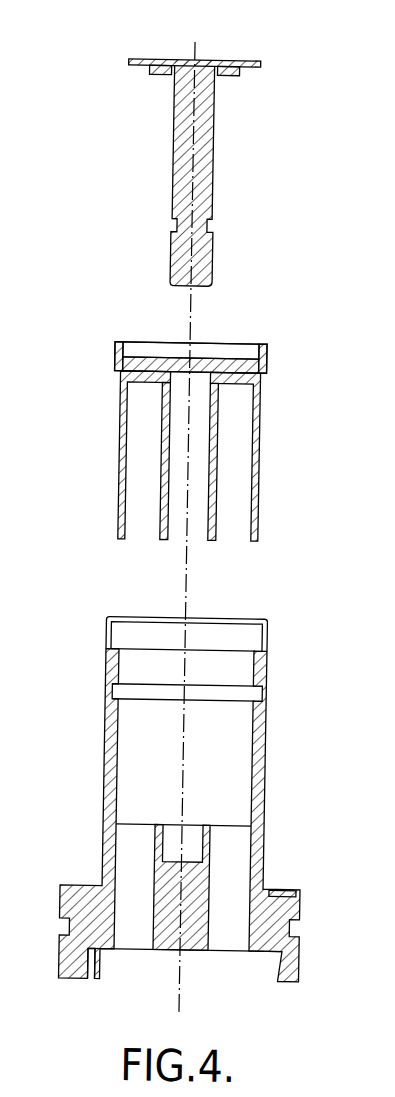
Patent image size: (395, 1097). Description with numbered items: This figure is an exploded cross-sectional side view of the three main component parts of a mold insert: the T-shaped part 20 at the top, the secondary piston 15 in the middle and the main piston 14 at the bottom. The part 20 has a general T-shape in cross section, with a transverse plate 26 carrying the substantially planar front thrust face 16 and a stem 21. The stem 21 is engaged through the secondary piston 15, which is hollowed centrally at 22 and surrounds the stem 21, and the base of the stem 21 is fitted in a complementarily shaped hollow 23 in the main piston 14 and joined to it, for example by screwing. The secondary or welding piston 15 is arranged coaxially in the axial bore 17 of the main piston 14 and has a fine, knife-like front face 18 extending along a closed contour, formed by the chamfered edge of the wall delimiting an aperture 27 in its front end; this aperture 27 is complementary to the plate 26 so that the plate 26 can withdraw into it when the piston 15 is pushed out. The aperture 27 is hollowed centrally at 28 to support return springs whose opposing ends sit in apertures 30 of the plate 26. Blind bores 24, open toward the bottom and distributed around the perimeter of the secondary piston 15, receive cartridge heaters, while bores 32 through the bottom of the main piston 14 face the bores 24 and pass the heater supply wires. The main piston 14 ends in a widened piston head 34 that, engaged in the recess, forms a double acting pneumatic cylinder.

The main piston 14 is at (191, 829).
The secondary piston 15 is at (191, 411).
The front thrust face 16 is at (206, 144).
The axial bore 17 is at (249, 720).
The front face 18 is at (189, 327).
The part 20 is at (209, 173).
The stem 21 is at (202, 152).
The central hollow 22 is at (203, 457).
The hollow 23 is at (210, 848).
The blind bores 24 is at (243, 514).
The transverse plate 26 is at (142, 61).
The aperture 27 is at (220, 321).
The central hollow of aperture 28 is at (158, 369).
The apertures 30 is at (156, 76).
The bores 32 is at (241, 888).
The widened piston head 34 is at (115, 951).